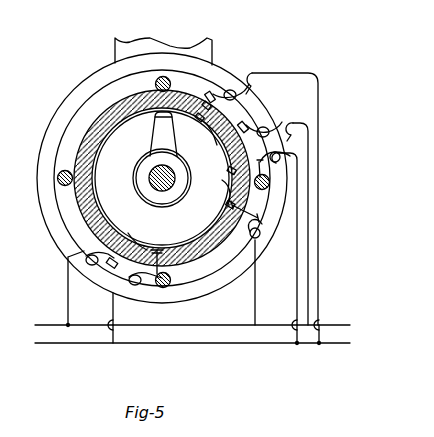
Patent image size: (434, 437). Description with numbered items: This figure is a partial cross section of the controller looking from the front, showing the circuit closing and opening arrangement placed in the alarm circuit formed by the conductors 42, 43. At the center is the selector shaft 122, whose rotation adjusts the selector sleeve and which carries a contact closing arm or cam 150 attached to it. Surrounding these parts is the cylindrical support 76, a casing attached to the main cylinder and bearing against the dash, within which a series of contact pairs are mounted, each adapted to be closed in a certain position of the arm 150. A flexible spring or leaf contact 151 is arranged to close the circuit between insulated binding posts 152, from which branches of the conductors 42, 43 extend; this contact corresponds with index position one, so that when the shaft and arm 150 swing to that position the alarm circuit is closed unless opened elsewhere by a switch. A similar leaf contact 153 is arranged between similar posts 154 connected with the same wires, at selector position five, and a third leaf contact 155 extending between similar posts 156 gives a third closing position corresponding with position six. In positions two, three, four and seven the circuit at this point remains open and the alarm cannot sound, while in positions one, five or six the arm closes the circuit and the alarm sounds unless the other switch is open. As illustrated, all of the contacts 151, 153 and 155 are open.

The cylindrical support 76 is at (110, 123).
The contact closing arm 150 is at (156, 143).
The selector shaft 122 is at (150, 182).
The conductor 42 is at (308, 158).
The conductor 43 is at (320, 135).
The posts 154 is at (218, 97).
The posts 156 is at (272, 170).
The insulated binding posts 152 is at (112, 268).
The flexible spring or leaf contact 151 is at (157, 229).
The leaf contact 153 is at (211, 128).
The leaf contact 155 is at (222, 198).